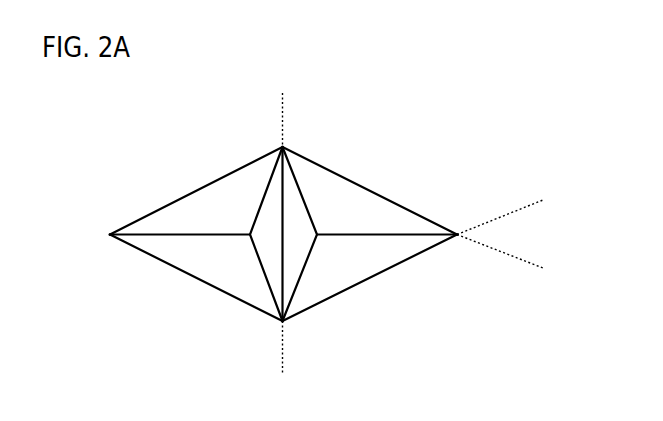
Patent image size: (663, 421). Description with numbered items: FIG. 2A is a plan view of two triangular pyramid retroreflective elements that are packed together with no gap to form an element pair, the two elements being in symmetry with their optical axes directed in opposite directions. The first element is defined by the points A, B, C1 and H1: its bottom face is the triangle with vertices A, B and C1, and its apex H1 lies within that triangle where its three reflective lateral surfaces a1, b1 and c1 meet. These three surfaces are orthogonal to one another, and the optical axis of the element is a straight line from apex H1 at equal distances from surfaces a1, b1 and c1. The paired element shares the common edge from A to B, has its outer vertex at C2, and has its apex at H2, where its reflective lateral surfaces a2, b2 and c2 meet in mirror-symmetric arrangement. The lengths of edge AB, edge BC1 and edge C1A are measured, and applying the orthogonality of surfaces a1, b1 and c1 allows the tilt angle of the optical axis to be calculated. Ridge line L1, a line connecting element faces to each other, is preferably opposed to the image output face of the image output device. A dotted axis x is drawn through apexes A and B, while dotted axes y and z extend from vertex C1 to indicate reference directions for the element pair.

The ridge line L1 is at (409, 237).
The apex A of bottom-face triangle A is at (291, 138).
The apex B of bottom-face triangle B is at (291, 334).
The apex C1 of bottom-face triangle C1 is at (481, 234).
The apex C2 of bottom-face triangle C2 is at (93, 234).
The apex of the element H1 is at (370, 234).
The apex of the paired element H2 is at (196, 234).
The reflective lateral surface a1 is at (365, 224).
The reflective lateral surface b1 is at (365, 249).
The reflective lateral surface c1 is at (294, 205).
The reflective lateral surface a2 is at (199, 224).
The reflective lateral surface b2 is at (199, 245).
The reflective lateral surface c2 is at (272, 260).
The x axis x is at (282, 234).
The y axis y is at (507, 210).
The z axis z is at (506, 258).